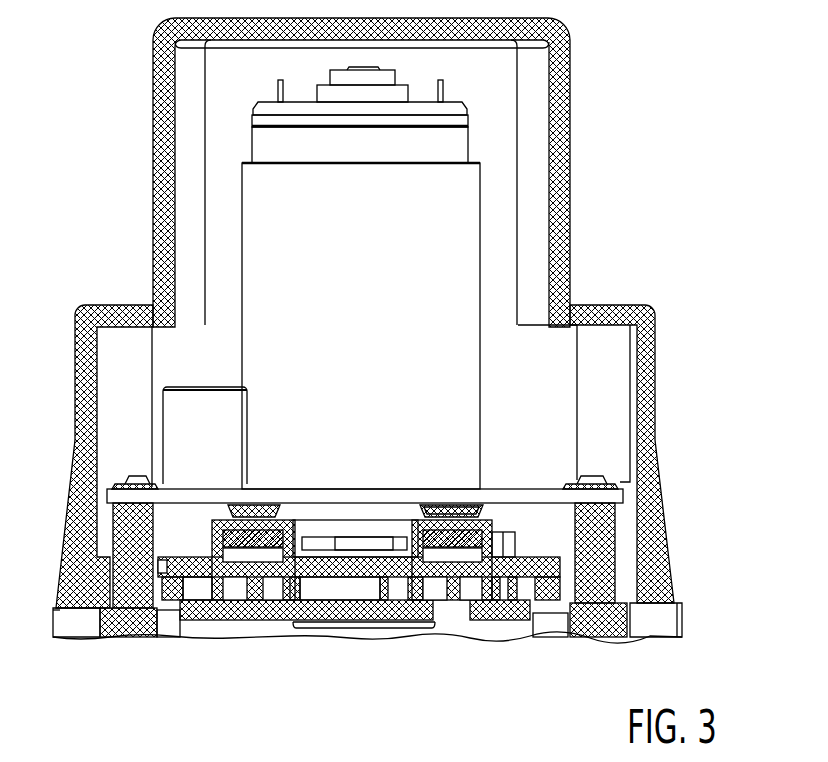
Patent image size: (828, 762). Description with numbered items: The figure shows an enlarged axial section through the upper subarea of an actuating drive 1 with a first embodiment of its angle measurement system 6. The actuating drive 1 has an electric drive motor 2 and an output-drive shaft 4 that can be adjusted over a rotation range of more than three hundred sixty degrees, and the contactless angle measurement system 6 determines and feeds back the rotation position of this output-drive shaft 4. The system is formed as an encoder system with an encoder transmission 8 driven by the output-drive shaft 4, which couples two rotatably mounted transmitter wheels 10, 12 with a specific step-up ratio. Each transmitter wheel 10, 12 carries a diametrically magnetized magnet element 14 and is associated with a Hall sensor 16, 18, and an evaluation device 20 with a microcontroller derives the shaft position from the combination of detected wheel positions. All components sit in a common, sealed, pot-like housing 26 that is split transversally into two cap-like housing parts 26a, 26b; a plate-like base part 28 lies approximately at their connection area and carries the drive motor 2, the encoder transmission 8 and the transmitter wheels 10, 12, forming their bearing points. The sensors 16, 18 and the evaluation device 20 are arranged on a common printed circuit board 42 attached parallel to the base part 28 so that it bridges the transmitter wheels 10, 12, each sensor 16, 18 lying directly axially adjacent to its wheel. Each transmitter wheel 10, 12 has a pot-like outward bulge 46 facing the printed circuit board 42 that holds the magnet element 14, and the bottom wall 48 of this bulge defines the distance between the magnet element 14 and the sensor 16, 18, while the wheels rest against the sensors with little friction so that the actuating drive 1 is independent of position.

The actuating drive 1 is at (712, 331).
The electric drive motor 2 is at (386, 288).
The output-drive shaft 4 is at (357, 635).
The contactless sensor angle measurement system 6 is at (518, 514).
The encoder transmission 8 is at (360, 592).
The transmitter wheel 10 is at (193, 577).
The transmitter wheel 12 is at (517, 580).
The magnet element 14 is at (250, 548).
The sensor 16 is at (262, 505).
The sensor 18 is at (445, 515).
The evaluation device 20 is at (307, 478).
The housing 26 is at (685, 585).
The housing part 26a is at (60, 627).
The housing part 26b is at (650, 397).
The base part 28 is at (128, 620).
The printed circuit board 42 is at (326, 497).
The outward bulge 46 is at (213, 525).
The bottom wall 48 is at (228, 526).